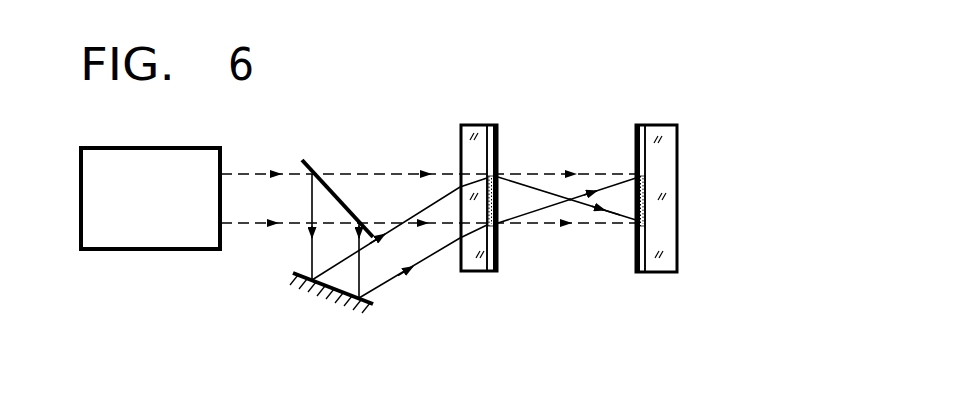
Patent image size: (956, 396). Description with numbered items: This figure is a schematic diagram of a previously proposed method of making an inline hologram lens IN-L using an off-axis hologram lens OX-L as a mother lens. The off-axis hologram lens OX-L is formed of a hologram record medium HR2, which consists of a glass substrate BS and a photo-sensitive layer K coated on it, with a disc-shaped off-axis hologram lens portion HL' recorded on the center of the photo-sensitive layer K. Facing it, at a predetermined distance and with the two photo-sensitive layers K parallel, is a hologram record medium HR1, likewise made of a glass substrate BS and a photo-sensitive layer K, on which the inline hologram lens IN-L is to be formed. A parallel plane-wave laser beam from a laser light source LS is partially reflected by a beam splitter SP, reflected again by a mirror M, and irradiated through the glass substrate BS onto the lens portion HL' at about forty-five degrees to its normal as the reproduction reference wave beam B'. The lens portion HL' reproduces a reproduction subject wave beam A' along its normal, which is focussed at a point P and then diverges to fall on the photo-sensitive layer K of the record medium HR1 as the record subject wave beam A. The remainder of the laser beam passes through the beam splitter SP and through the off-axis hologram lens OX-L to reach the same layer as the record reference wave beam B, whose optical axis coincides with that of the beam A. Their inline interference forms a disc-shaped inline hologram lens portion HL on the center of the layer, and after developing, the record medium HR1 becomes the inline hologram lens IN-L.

The laser light source LS is at (151, 252).
The beam splitter SP is at (318, 150).
The mirror M is at (372, 304).
The reproduction reference wave beam B' is at (399, 248).
The hologram record medium HR2 is at (498, 68).
The glass substrate BS is at (475, 127).
The photo-sensitive layer K is at (495, 126).
The reproduction subject wave beam A' is at (567, 175).
The record reference wave beam B is at (567, 177).
The hologram record medium HR1 is at (680, 69).
The off-axis hologram lens portion HL' is at (520, 247).
The inline hologram lens portion HL is at (631, 247).
The focal point P is at (569, 201).
The record subject wave beam A is at (601, 244).
The off-axis hologram lens OX-L is at (478, 278).
The inline hologram lens IN-L is at (666, 279).